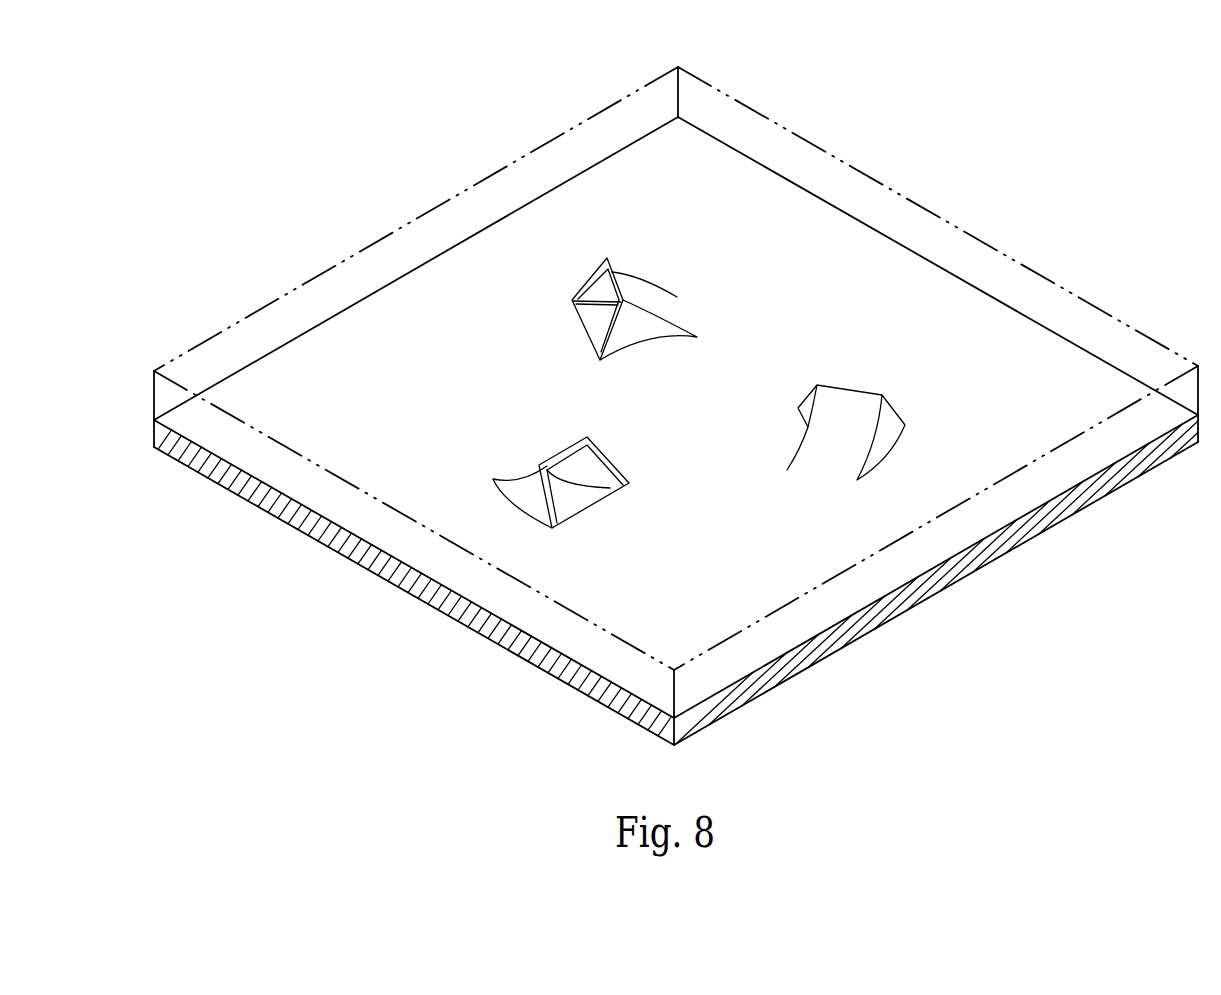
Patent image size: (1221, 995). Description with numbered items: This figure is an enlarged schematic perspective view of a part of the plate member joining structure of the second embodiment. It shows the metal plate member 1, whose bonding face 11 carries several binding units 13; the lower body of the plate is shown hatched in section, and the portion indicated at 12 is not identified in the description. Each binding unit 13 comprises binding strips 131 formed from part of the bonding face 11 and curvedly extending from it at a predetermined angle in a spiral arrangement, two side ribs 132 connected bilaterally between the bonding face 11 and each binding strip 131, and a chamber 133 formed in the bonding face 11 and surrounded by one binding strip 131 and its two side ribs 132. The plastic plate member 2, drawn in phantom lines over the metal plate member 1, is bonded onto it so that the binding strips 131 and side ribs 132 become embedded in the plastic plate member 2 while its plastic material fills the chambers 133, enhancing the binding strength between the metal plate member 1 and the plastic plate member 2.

The metal plate member 1 is at (676, 406).
The plastic plate member 2 is at (940, 218).
The bonding face 11 is at (405, 273).
The substrate body 12 is at (937, 595).
The binding unit 13 is at (557, 282).
The binding strip 131 is at (617, 277).
The side rib 132 is at (623, 337).
The chamber 133 is at (583, 323).